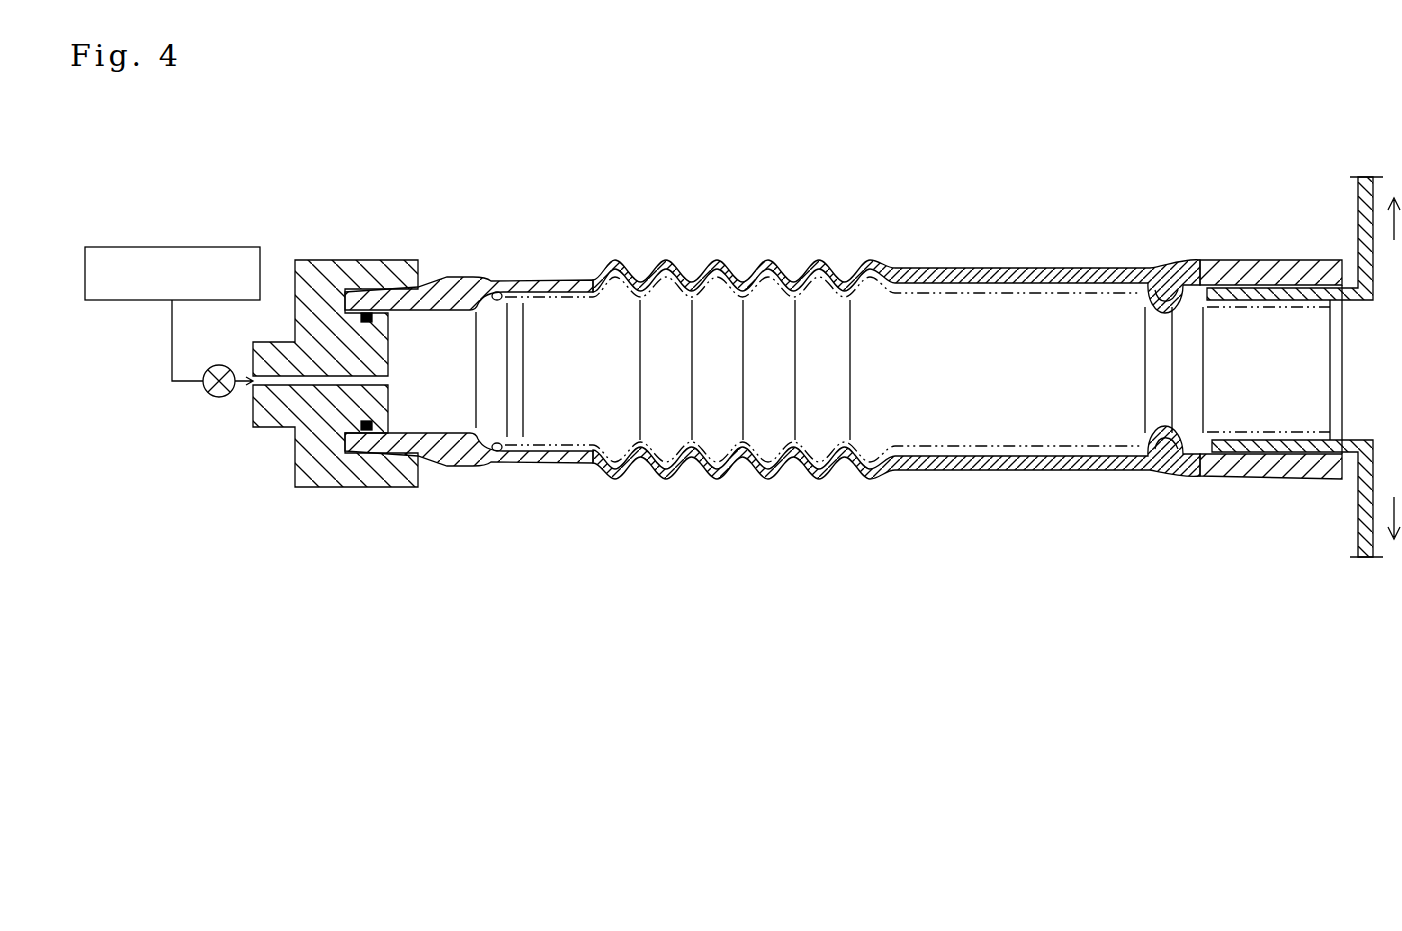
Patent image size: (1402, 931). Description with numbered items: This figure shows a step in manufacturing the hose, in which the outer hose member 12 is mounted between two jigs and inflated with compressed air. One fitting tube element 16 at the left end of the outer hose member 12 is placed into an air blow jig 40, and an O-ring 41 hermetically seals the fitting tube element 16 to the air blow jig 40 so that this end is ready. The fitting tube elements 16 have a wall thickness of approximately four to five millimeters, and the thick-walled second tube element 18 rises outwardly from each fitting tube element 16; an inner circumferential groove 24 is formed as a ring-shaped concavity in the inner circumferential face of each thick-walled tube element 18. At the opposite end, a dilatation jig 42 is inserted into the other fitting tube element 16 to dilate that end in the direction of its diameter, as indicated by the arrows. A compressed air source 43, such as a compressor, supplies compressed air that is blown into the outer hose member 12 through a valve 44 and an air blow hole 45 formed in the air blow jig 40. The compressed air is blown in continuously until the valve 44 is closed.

The outer hose member 12 is at (891, 216).
The fitting tube element 16 is at (423, 292).
The thick-walled second tube element 18 is at (488, 278).
The inner circumferential groove 24 is at (497, 296).
The air blow jig 40 is at (332, 262).
The O-ring 41 is at (372, 317).
The dilatation jig 42 is at (1360, 195).
The compressed air source 43 is at (192, 247).
The valve 44 is at (216, 398).
The air blow hole 45 is at (292, 380).